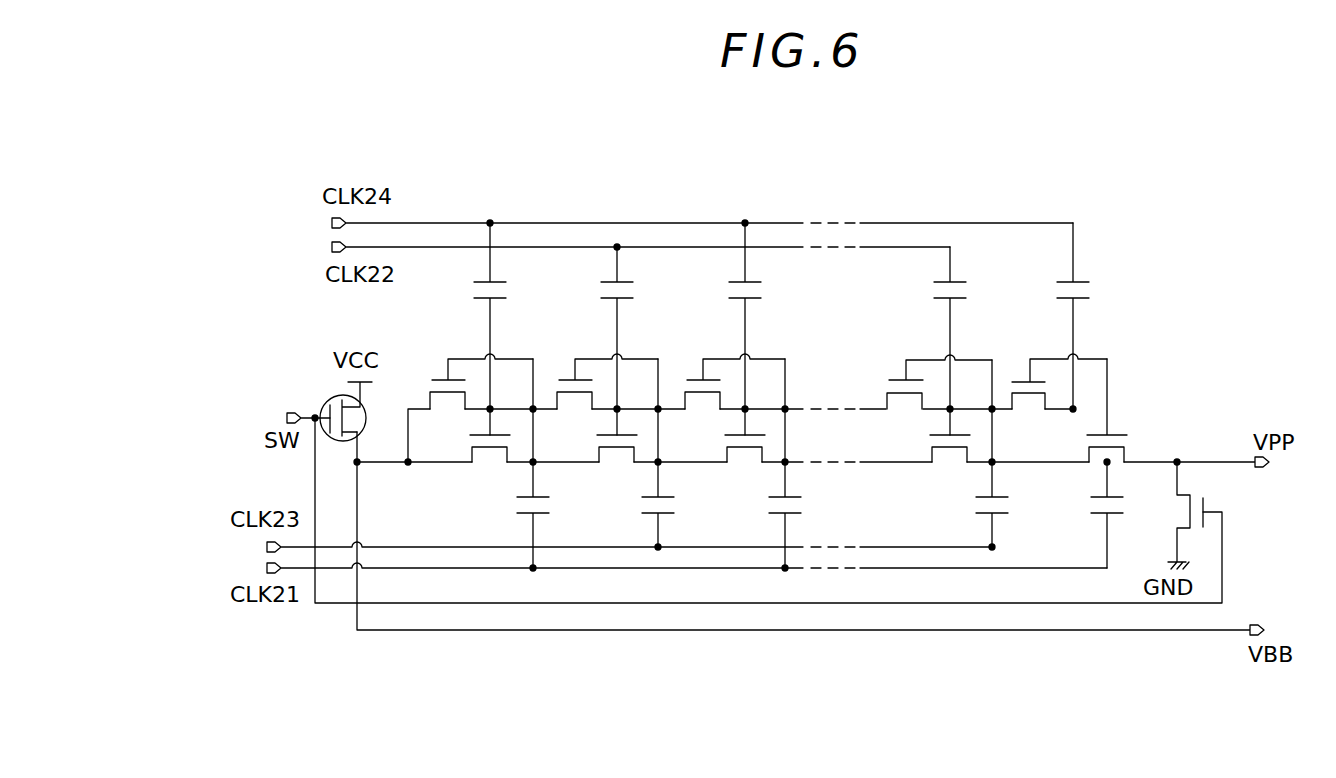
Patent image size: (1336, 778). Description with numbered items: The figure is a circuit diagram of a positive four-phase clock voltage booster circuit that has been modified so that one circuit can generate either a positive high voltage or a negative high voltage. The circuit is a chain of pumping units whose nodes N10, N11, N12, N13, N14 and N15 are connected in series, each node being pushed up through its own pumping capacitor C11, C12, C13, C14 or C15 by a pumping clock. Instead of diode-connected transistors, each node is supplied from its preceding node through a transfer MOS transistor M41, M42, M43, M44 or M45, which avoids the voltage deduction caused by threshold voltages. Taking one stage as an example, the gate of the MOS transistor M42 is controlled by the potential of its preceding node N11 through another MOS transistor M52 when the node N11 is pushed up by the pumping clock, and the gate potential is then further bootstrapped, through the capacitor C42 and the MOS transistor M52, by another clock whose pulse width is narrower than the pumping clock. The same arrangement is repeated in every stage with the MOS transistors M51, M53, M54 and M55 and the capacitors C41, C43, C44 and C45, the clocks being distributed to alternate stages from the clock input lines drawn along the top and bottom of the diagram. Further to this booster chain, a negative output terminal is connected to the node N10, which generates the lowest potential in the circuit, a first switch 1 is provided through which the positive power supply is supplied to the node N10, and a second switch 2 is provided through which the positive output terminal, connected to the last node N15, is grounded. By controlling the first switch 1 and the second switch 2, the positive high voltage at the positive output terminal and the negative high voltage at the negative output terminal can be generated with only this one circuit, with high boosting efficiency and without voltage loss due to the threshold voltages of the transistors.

The first switch 1 is at (366, 404).
The second switch 2 is at (1191, 493).
The capacitor C41 is at (506, 291).
The capacitor C42 is at (634, 291).
The capacitor C43 is at (762, 291).
The capacitor C44 is at (967, 291).
The capacitor C45 is at (1090, 291).
The pumping capacitor C11 is at (516, 500).
The pumping capacitor C12 is at (645, 500).
The pumping capacitor C13 is at (770, 500).
The pumping capacitor C14 is at (978, 500).
The pumping capacitor C15 is at (1092, 500).
The MOS transistor M41 is at (487, 432).
The MOS transistor M42 is at (614, 432).
The MOS transistor M43 is at (742, 432).
The MOS transistor M44 is at (945, 432).
The MOS transistor M45 is at (1108, 425).
The MOS transistor M51 is at (435, 378).
The MOS transistor M52 is at (562, 378).
The MOS transistor M53 is at (690, 378).
The MOS transistor M54 is at (893, 378).
The MOS transistor M55 is at (1025, 380).
The node N10 is at (408, 464).
The node N11 is at (533, 464).
The node N12 is at (658, 464).
The node N13 is at (787, 464).
The node N14 is at (994, 464).
The node N15 is at (1109, 464).